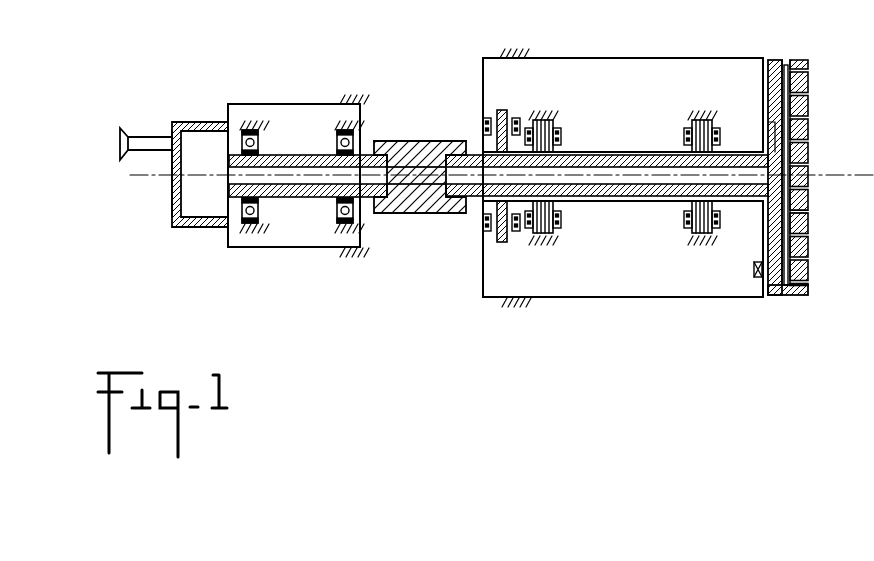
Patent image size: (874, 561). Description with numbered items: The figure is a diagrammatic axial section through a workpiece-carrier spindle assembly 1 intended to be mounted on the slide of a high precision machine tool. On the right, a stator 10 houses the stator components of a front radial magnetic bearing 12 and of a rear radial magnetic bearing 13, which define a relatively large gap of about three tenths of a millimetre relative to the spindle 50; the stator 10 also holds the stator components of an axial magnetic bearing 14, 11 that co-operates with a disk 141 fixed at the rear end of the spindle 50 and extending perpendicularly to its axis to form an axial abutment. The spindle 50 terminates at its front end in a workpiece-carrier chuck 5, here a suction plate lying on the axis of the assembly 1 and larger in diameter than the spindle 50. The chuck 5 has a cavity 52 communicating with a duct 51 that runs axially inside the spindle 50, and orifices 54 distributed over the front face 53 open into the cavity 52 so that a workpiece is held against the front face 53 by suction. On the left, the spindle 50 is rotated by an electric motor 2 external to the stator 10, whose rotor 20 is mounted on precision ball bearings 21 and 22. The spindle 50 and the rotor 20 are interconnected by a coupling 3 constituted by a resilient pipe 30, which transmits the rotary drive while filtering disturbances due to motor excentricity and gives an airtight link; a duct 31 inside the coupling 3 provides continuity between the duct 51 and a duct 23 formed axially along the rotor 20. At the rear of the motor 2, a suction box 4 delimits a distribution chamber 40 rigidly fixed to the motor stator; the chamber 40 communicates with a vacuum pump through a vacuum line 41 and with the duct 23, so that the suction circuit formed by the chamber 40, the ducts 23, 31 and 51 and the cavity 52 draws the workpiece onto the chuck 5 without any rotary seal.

The workpiece-carrier spindle assembly 1 is at (479, 51).
The stator 10 is at (698, 57).
The first coil 11 is at (566, 114).
The front radial magnetic bearing 12 is at (677, 117).
The rear radial magnetic bearing 13 is at (618, 148).
The disc 14 is at (512, 108).
The disk 141 is at (505, 243).
The electric motor 2 is at (265, 103).
The rotor 20 is at (300, 199).
The precision ball bearing 21 is at (247, 232).
The precision ball bearing 22 is at (332, 232).
The duct 23 is at (293, 157).
The coupling 3 is at (421, 215).
The pipe 30 is at (440, 140).
The duct 31 is at (405, 187).
The suction box 4 is at (176, 120).
The distribution chamber 40 is at (172, 217).
The vacuum line 41 is at (137, 142).
The workpiece-carrier chuck 5 is at (813, 65).
The spindle 50 is at (474, 199).
The duct 51 is at (634, 183).
The cavity 52 is at (787, 64).
The front face 53 is at (808, 150).
The orifices 54 is at (809, 233).